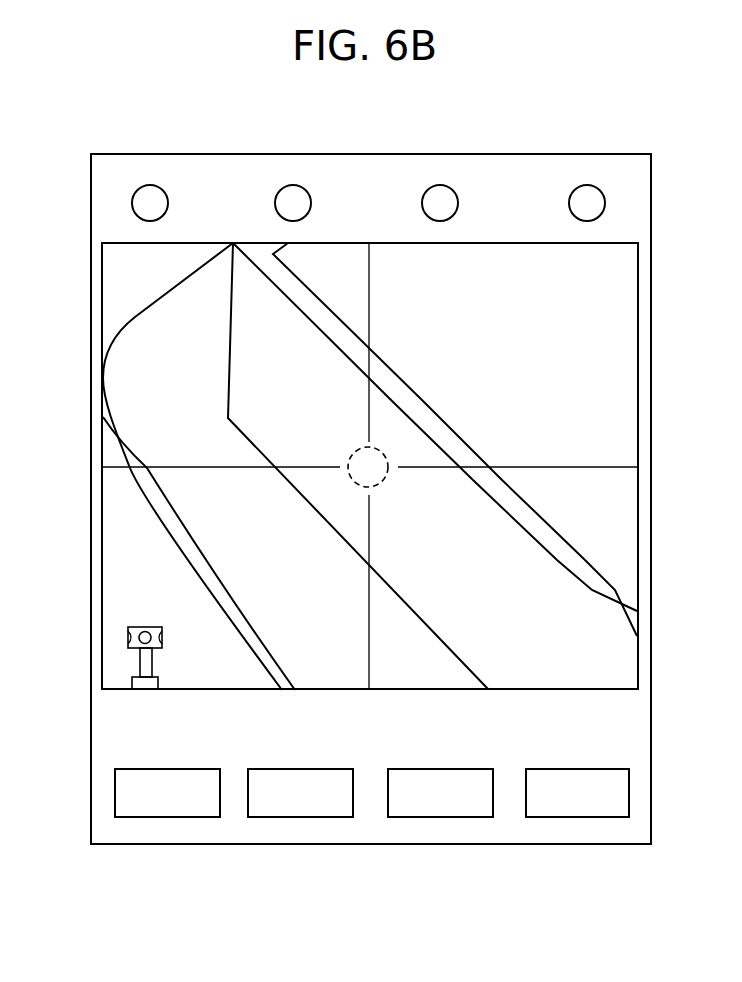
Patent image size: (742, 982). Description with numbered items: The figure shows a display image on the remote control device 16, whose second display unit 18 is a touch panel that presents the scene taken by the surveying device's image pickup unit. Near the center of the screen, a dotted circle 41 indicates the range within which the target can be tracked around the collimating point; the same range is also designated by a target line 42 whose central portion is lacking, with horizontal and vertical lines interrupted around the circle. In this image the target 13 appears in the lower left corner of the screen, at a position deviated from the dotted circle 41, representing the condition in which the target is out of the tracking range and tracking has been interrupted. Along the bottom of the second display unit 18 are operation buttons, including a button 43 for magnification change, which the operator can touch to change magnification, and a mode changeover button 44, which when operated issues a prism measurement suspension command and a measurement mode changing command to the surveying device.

The remote control device 16 is at (563, 153).
The second display unit 18 is at (600, 274).
The dotted circle 41 is at (382, 450).
The target line 42 is at (540, 467).
The target 13 is at (143, 627).
The button for magnification change 43 is at (607, 768).
The mode changeover button 44 is at (458, 817).